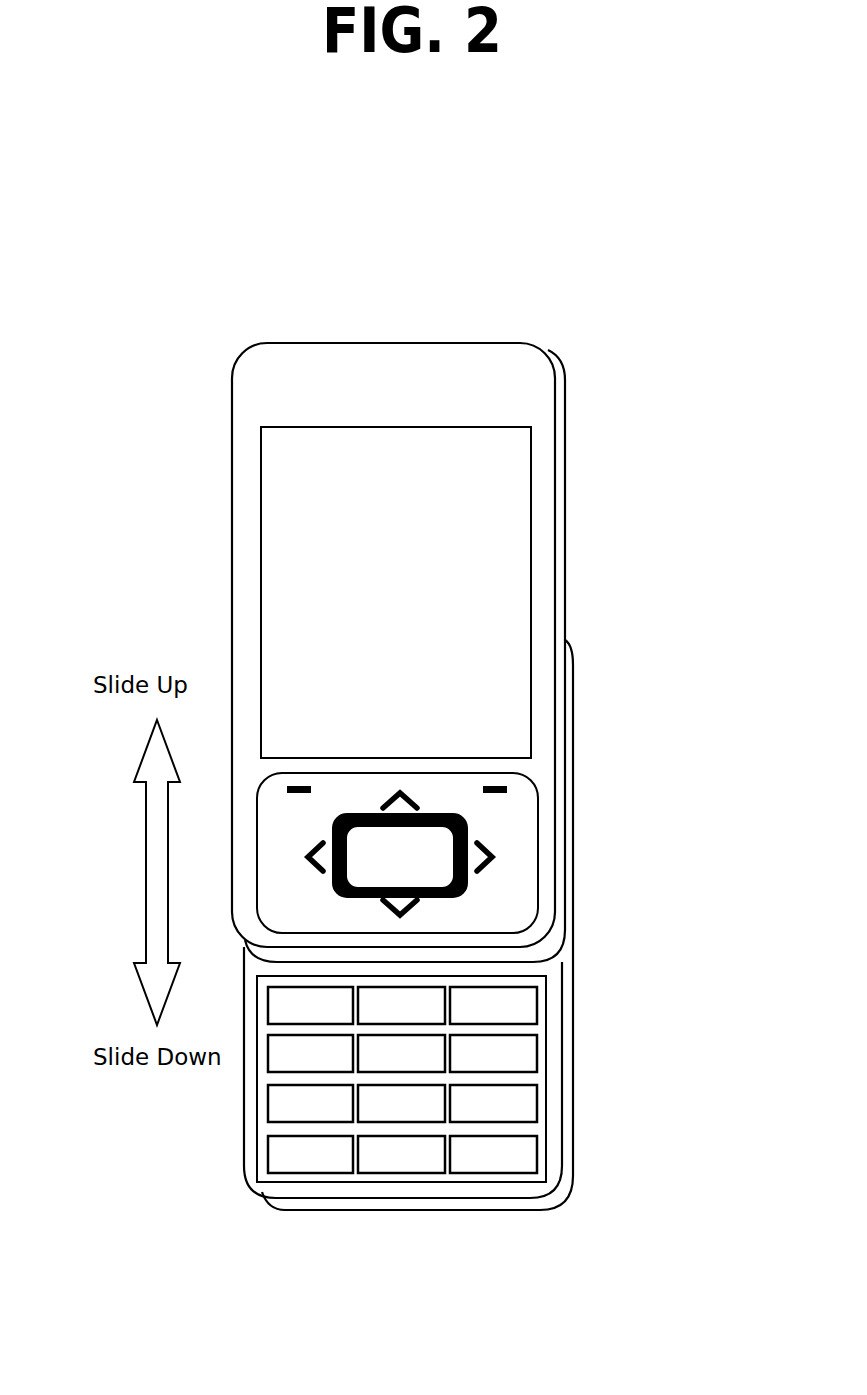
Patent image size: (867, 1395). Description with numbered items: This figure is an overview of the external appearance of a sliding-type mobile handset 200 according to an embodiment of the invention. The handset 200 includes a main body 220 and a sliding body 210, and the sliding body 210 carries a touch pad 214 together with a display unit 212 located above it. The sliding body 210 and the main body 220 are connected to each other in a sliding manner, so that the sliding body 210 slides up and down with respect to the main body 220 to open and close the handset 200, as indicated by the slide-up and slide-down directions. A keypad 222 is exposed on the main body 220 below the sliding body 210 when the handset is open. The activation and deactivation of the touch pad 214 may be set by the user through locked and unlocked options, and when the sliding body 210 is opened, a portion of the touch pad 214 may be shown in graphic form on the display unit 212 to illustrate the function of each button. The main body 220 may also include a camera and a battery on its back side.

The sliding-type mobile handset 200 is at (215, 303).
The sliding body 210 is at (545, 400).
The display unit 212 is at (522, 593).
The touch pad 214 is at (527, 855).
The main body 220 is at (400, 1192).
The keypad 222 is at (543, 1080).